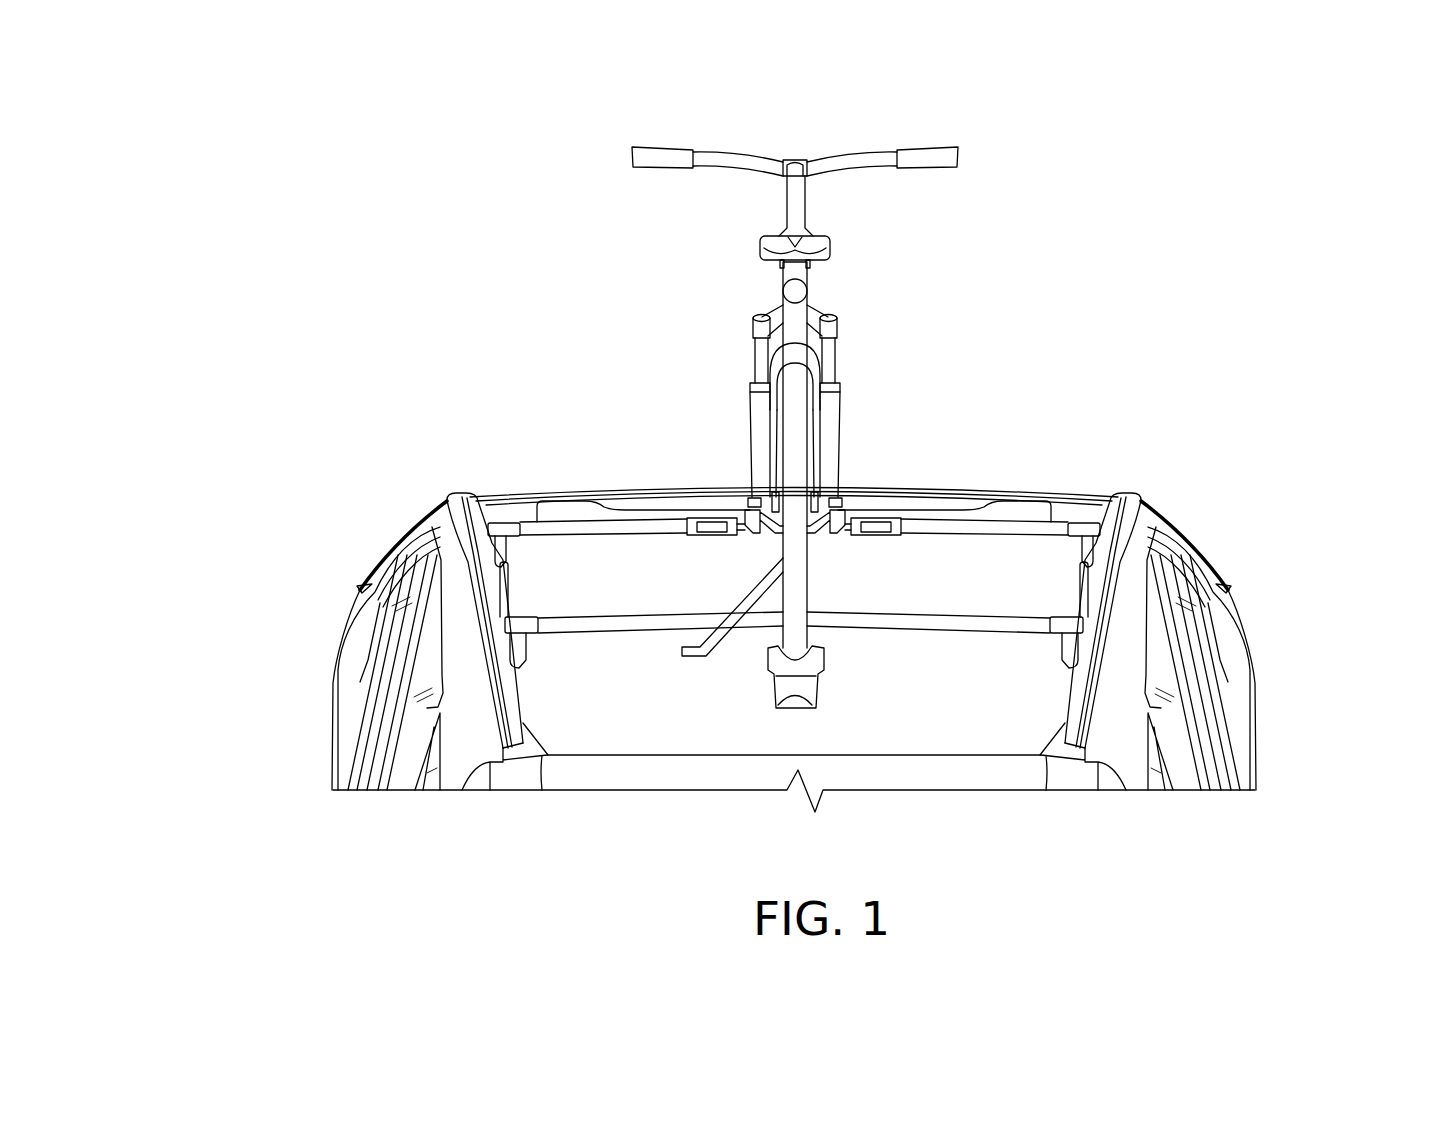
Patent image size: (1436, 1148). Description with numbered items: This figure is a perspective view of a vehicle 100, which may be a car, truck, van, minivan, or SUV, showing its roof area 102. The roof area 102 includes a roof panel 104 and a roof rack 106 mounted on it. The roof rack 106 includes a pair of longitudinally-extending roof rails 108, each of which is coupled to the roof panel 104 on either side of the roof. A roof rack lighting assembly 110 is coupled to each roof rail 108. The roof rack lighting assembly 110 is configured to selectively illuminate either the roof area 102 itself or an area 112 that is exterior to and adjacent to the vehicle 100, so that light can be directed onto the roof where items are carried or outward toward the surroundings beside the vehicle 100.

The vehicle 100 is at (398, 152).
The roof area 102 is at (920, 396).
The roof panel 104 is at (587, 713).
The roof rack 106 is at (576, 410).
The roof rails 108 is at (473, 600).
The roof rack lighting assembly 110 is at (500, 606).
The area exterior to and adjacent to vehicle 112 is at (221, 735).